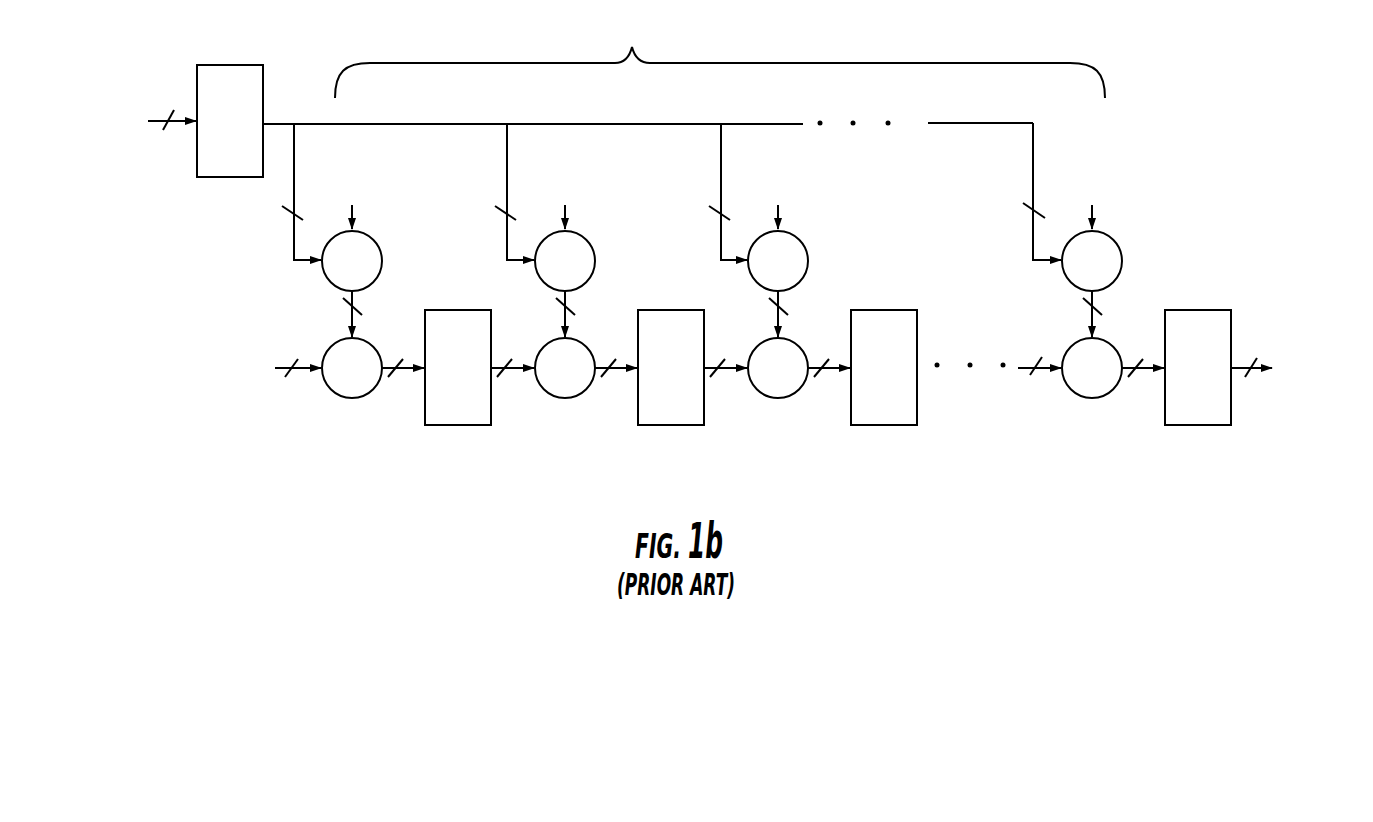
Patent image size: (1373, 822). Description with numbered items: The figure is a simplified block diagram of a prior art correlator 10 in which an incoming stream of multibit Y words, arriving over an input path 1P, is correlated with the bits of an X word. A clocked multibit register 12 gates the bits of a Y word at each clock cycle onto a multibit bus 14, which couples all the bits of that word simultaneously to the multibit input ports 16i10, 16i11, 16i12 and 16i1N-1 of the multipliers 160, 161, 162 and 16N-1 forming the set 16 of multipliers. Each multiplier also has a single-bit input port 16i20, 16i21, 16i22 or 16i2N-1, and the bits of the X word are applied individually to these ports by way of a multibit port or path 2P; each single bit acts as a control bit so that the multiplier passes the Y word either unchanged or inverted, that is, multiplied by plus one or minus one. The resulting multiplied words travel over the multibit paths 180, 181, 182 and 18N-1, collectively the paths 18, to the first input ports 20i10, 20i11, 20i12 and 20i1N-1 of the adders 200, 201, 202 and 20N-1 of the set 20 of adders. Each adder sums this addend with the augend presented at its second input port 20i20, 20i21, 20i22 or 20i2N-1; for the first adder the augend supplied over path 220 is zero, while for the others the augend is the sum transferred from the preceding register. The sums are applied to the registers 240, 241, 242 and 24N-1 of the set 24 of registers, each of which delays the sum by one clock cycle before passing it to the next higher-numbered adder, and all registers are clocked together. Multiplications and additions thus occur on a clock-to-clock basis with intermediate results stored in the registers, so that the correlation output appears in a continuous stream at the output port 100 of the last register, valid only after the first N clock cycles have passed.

The correlator 10 is at (546, 551).
The input data bus 1P is at (173, 122).
The multibit port or path 2P is at (720, 55).
The register 12 is at (233, 178).
The multibit bus 14 is at (668, 125).
The set of multipliers 16 is at (176, 262).
The multibit path 18 is at (697, 315).
The set of adders 20 is at (161, 382).
The set of registers 24 is at (514, 494).
The path 220 is at (302, 371).
The multiplier 160 is at (382, 259).
The multiplier 161 is at (595, 259).
The multiplier 162 is at (808, 259).
The multiplier 16N-1 is at (1122, 259).
The multibit input port 16i10 is at (318, 265).
The multibit input port 16i11 is at (531, 264).
The multibit input port 16i12 is at (746, 267).
The multibit input port 16i1N-1 is at (1060, 262).
The single-bit input port 16i20 is at (358, 232).
The single-bit input port 16i21 is at (571, 232).
The single-bit input port 16i22 is at (784, 232).
The single-bit input port 16i2N-1 is at (1098, 232).
The multibit path 180 is at (350, 318).
The multibit path 181 is at (563, 318).
The multibit path 182 is at (776, 318).
The multibit path 18N-1 is at (1090, 319).
The adder 200 is at (359, 399).
The adder 201 is at (577, 400).
The adder 202 is at (787, 400).
The adder 20N-1 is at (1100, 398).
The input port 20i10 is at (355, 337).
The input port 20i11 is at (568, 338).
The input port 20i12 is at (781, 338).
The input port 20i1N-1 is at (1094, 336).
The input port 20i20 is at (318, 372).
The input port 20i21 is at (536, 374).
The input port 20i22 is at (747, 374).
The input port 20i2N-1 is at (1061, 374).
The register 240 is at (460, 425).
The register 241 is at (672, 427).
The register 242 is at (878, 427).
The register 24N-1 is at (1197, 423).
The output port 100 is at (1233, 372).